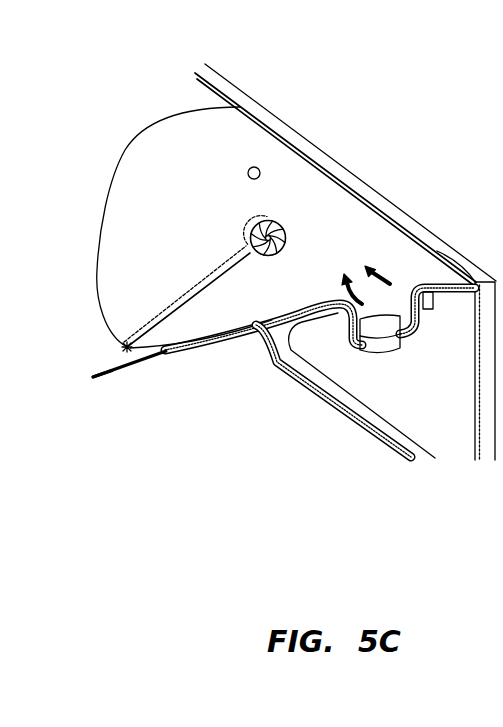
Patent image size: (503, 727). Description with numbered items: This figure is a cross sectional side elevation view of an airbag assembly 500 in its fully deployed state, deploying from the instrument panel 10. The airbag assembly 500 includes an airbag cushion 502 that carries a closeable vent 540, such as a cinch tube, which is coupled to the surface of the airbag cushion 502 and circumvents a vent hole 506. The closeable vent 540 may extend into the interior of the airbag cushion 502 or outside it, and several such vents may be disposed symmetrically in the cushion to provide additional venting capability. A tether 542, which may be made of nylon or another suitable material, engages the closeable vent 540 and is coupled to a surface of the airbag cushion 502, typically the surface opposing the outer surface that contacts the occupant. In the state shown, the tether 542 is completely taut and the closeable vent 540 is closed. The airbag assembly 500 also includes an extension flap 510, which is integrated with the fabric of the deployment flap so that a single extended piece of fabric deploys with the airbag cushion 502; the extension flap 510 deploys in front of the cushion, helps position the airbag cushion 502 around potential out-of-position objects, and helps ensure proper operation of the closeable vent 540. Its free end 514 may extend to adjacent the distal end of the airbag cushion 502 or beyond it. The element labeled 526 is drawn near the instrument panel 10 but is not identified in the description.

The instrument panel 10 is at (431, 403).
The airbag assembly 500 is at (240, 352).
The airbag cushion 502 is at (205, 133).
The vent hole 506 is at (283, 223).
The extension flap 510 is at (136, 362).
The free end of extension flap 514 is at (93, 377).
The cylinder 526 is at (380, 347).
The closeable vent 540 is at (287, 236).
The tether 542 is at (200, 292).